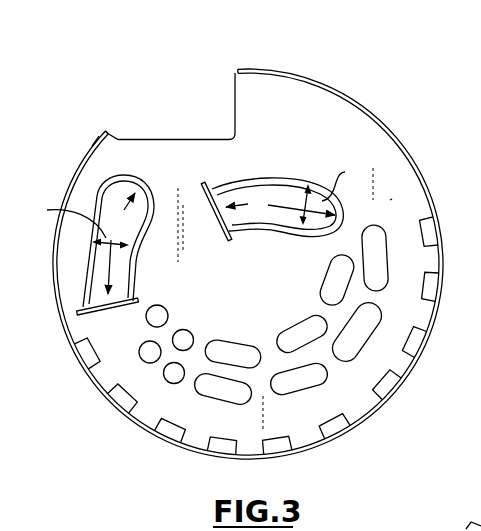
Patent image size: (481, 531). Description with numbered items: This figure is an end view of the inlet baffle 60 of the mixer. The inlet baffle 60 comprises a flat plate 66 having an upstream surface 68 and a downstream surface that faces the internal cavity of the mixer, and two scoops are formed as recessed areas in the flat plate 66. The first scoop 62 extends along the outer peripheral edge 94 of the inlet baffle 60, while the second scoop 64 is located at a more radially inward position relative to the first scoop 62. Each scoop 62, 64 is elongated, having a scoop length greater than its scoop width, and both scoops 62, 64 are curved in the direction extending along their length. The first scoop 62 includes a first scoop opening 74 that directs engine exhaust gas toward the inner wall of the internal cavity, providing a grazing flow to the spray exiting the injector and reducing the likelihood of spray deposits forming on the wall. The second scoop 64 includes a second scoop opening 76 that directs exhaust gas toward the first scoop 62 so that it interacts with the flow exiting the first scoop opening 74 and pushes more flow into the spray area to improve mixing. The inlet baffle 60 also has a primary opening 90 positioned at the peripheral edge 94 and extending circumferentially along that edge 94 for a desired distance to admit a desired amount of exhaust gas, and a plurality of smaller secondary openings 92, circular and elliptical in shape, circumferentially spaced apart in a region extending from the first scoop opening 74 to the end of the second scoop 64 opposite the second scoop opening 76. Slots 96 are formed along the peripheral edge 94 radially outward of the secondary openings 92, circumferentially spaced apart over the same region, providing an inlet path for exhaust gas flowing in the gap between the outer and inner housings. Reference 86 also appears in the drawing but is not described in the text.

The inlet baffle 60 is at (412, 121).
The first scoop 62 is at (100, 262).
The second scoop 64 is at (282, 192).
The flat plate 66 is at (262, 293).
The upstream surface 68 is at (390, 200).
The first scoop opening 74 is at (104, 303).
The second scoop opening 76 is at (204, 203).
The adjacent component 86 is at (480, 512).
The primary opening 90 is at (213, 116).
The secondary openings 92 is at (150, 354).
The peripheral edge 94 is at (95, 147).
The slots 96 is at (432, 298).